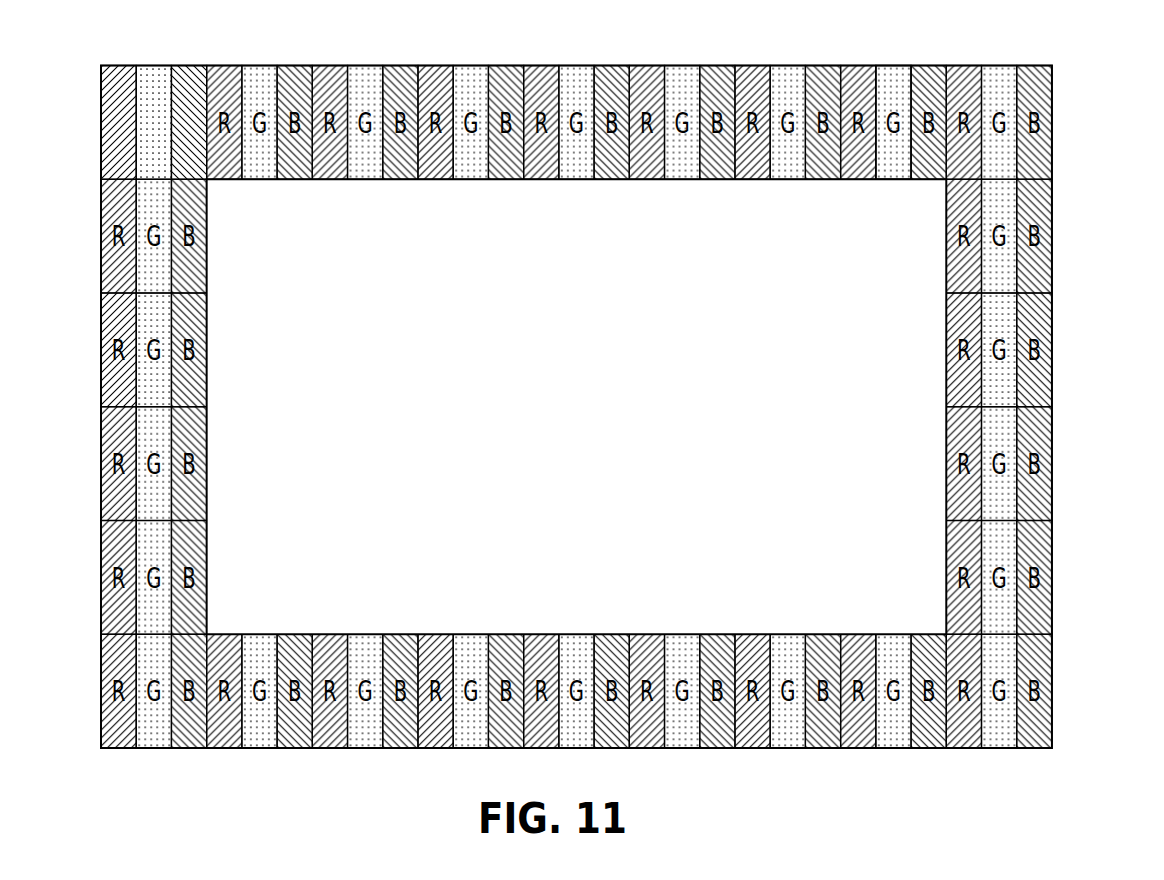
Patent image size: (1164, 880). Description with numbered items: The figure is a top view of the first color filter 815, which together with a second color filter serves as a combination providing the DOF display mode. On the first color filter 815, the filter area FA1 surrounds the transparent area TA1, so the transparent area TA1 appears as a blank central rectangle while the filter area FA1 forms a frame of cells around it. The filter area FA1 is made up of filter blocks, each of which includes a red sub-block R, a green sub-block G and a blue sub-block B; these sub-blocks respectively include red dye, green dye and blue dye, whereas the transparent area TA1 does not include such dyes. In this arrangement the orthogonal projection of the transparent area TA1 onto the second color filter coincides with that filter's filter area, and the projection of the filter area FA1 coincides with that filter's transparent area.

The first color filter 815 is at (618, 432).
The transparent area TA1 is at (779, 200).
The filter area FA1 is at (893, 78).
The red sub-block R is at (118, 123).
The green sub-block G is at (153, 123).
The blue sub-block B is at (188, 123).